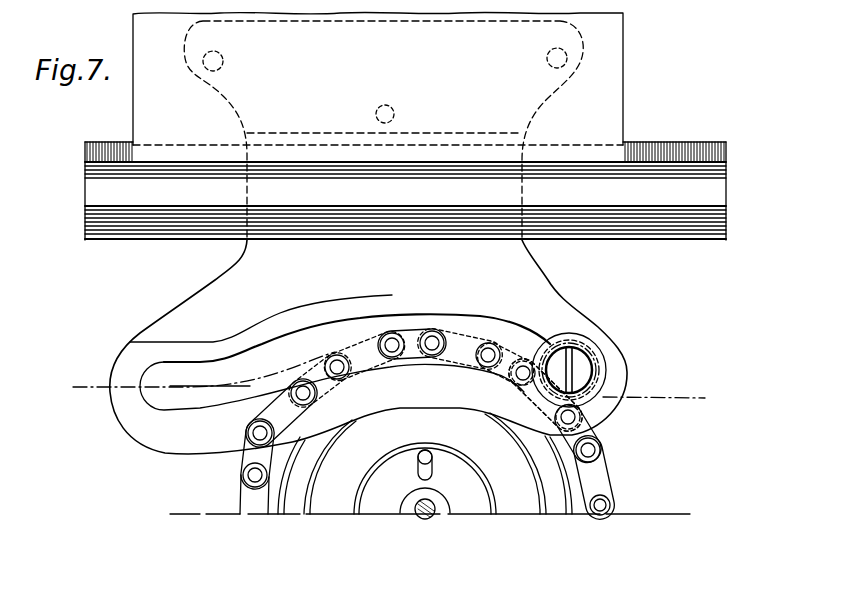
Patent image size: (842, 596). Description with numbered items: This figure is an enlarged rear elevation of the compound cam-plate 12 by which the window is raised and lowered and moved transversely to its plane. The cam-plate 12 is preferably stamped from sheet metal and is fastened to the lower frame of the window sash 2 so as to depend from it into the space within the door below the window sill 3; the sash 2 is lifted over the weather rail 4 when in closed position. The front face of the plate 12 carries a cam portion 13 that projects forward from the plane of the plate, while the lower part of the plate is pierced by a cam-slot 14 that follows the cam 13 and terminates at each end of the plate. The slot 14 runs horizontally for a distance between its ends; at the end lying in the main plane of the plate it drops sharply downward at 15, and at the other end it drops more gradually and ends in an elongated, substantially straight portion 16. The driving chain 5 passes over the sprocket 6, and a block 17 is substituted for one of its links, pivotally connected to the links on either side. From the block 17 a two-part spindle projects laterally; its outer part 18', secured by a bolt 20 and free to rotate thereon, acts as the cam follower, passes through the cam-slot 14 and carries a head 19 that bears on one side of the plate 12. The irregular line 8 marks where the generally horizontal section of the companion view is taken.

The window sash 2 is at (617, 90).
The window sill 3 is at (716, 190).
The weather rail 4 is at (700, 142).
The chain 5 is at (612, 490).
The sprocket 6 is at (530, 498).
The section line 8 is at (386, 381).
The compound cam-plate 12 is at (368, 237).
The cam portion 13 is at (285, 328).
The cam-slot 14 is at (235, 378).
The sharply dropping end of slot 15 is at (597, 363).
The elongated straight portion 16 is at (195, 370).
The block 17 is at (528, 352).
The spindle part 18' is at (606, 370).
The head 19 is at (597, 350).
The bolt 20 is at (607, 397).